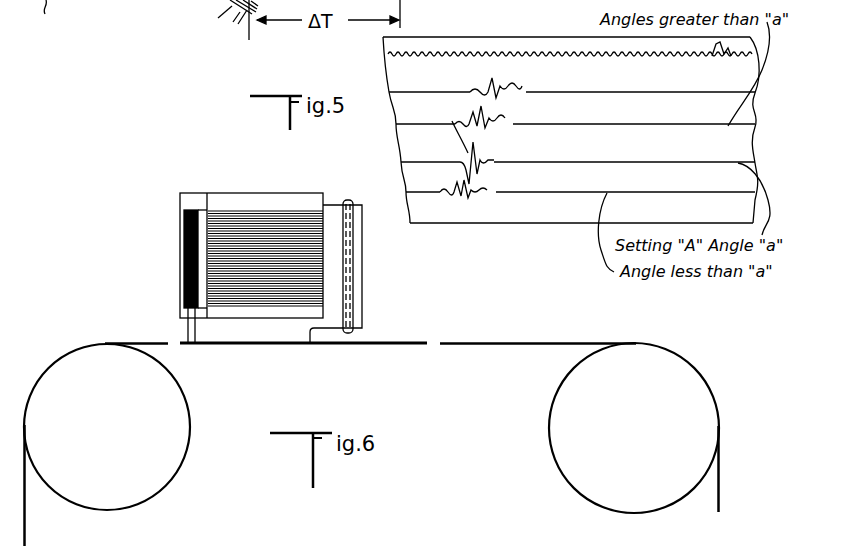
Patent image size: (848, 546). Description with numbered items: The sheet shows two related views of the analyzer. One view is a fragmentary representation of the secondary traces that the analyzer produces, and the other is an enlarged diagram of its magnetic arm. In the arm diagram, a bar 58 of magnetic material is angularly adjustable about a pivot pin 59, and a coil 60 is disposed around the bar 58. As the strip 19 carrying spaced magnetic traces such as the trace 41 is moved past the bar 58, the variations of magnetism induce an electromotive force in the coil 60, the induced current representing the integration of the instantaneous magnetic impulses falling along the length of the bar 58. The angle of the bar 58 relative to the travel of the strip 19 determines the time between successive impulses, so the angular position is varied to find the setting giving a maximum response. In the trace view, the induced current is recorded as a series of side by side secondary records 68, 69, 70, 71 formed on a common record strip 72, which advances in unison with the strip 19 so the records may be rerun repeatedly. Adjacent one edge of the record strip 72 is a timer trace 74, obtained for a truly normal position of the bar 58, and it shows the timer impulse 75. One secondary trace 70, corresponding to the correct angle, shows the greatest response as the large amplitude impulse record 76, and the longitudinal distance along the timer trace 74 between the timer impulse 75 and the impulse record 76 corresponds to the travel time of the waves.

In FIG. 5, the strip 19 is at (430, 8).
In FIG. 6, the strip 19 is at (524, 346).
In FIG. 5, the trace 41 is at (38, 15).
In FIG. 5, the bar 58 is at (215, 21).
In FIG. 6, the bar 58 is at (207, 328).
In FIG. 6, the pivot pin 59 is at (357, 328).
In FIG. 5, the coil 60 is at (244, 22).
In FIG. 6, the coil 60 is at (247, 226).
In FIG. 5, the secondary record 68 is at (545, 91).
In FIG. 5, the secondary record 69 is at (557, 123).
In FIG. 5, the secondary trace 70 is at (562, 163).
In FIG. 5, the secondary record 71 is at (568, 194).
In FIG. 5, the record strip 72 is at (519, 221).
In FIG. 5, the timer trace 74 is at (483, 52).
In FIG. 5, the timer impulse 75 is at (710, 54).
In FIG. 5, the impulse record 76 is at (454, 128).